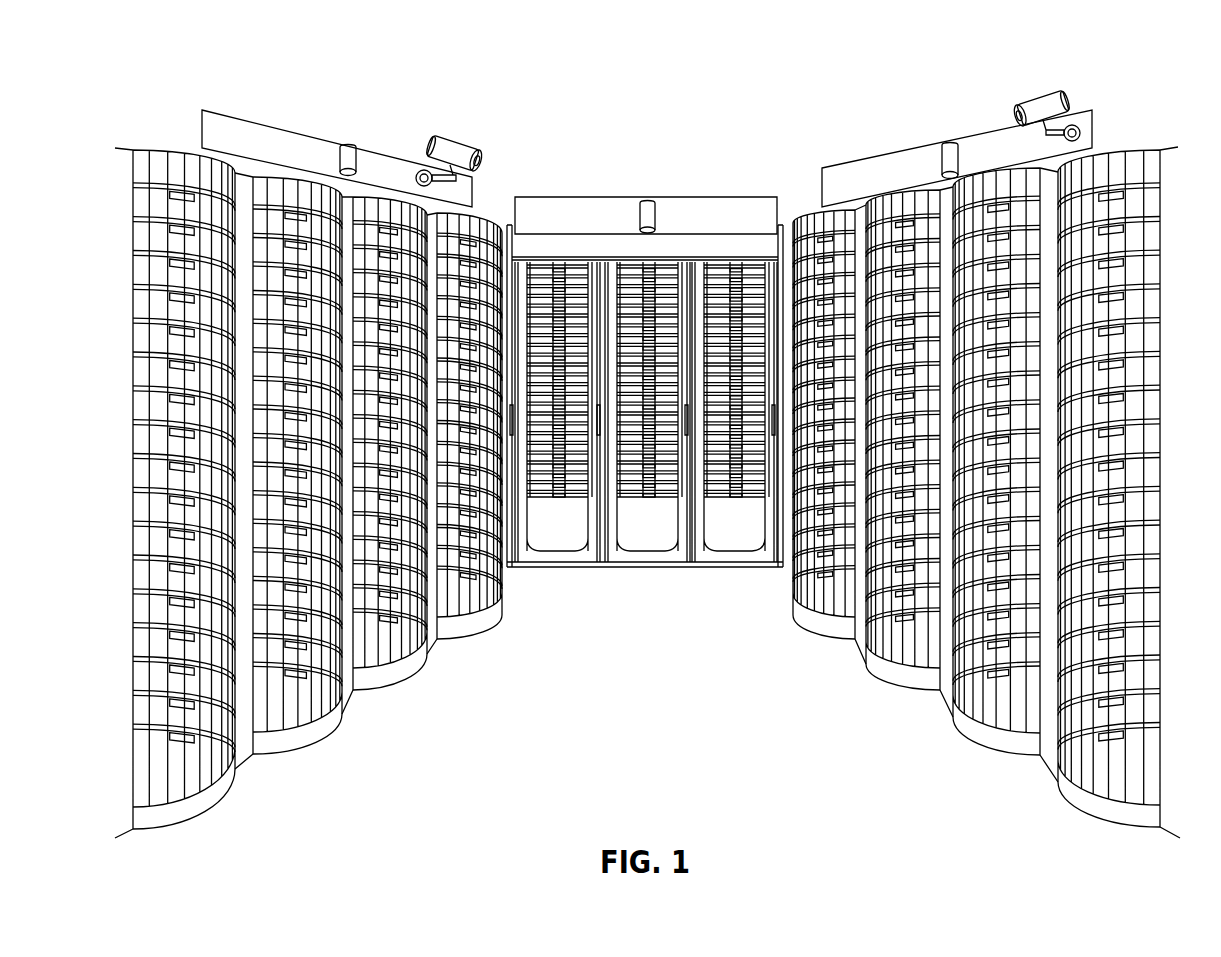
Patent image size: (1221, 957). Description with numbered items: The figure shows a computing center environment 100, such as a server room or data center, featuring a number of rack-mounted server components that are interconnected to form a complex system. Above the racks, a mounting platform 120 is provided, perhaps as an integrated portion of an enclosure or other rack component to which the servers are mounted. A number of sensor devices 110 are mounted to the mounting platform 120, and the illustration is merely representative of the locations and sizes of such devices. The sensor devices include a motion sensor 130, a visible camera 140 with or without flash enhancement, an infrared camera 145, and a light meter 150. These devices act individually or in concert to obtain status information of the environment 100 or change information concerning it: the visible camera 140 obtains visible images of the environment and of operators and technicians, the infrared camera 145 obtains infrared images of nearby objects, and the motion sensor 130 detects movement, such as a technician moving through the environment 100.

The computing center environment 100 is at (113, 94).
The sensor devices 110 is at (1020, 84).
The mounting platform 120 is at (378, 149).
The motion sensor 130 is at (655, 212).
The visible camera 140 is at (468, 146).
The infrared camera 145 is at (1072, 95).
The light meter 150 is at (337, 148).